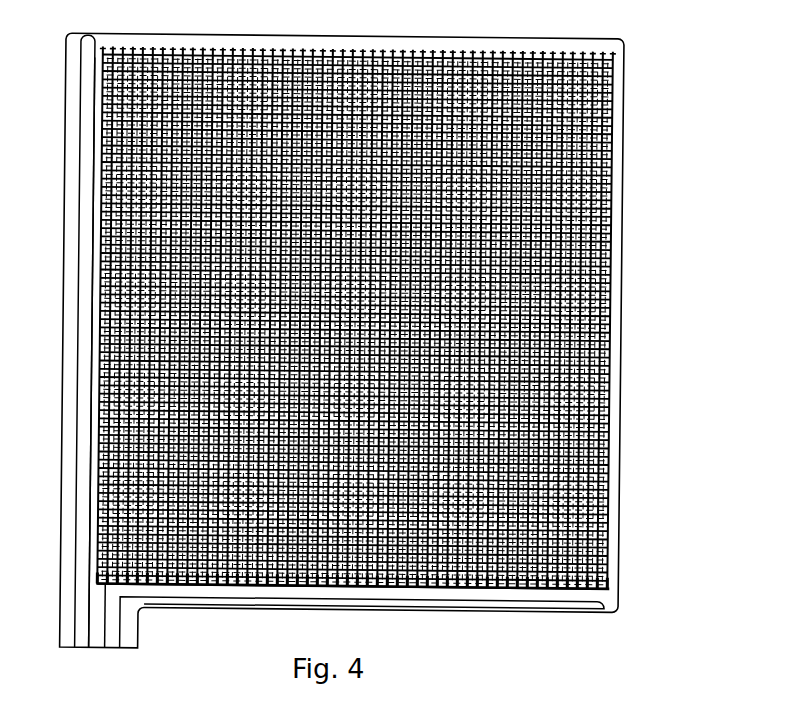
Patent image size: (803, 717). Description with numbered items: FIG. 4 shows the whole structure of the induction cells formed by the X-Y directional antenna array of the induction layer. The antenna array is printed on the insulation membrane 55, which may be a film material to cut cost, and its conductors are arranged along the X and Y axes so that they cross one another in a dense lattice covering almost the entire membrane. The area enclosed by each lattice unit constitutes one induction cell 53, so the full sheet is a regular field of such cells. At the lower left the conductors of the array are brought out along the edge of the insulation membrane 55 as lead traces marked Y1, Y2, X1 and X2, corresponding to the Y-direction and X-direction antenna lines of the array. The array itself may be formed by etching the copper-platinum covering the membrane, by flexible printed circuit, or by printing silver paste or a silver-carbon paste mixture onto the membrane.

The induction cell 53 is at (598, 231).
The insulation membrane 55 is at (610, 582).
The Y1 lead electrode Y1 is at (80, 352).
The Y2 lead electrode Y2 is at (91, 371).
The X1 lead electrode X1 is at (105, 626).
The X2 lead electrode X2 is at (356, 641).